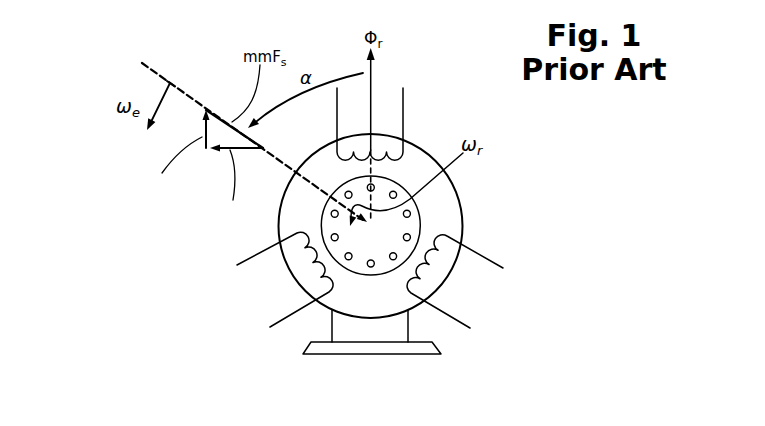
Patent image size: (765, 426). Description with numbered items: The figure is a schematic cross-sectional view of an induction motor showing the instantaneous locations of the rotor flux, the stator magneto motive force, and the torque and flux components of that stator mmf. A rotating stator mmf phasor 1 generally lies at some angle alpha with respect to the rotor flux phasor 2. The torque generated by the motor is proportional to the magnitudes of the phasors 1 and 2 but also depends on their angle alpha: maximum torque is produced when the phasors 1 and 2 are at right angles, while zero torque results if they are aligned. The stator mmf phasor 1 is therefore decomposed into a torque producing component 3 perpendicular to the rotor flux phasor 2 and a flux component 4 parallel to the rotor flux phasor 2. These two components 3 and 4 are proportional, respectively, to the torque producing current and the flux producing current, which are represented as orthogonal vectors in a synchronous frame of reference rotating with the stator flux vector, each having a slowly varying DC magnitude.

The stator mmf phasor 1 is at (210, 112).
The rotor flux phasor 2 is at (372, 88).
The torque producing component 3 is at (252, 151).
The flux component 4 is at (205, 149).